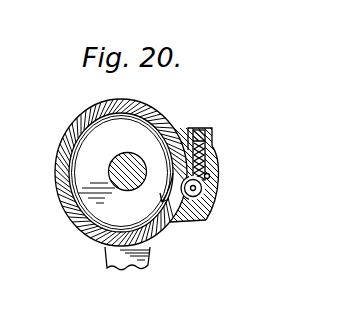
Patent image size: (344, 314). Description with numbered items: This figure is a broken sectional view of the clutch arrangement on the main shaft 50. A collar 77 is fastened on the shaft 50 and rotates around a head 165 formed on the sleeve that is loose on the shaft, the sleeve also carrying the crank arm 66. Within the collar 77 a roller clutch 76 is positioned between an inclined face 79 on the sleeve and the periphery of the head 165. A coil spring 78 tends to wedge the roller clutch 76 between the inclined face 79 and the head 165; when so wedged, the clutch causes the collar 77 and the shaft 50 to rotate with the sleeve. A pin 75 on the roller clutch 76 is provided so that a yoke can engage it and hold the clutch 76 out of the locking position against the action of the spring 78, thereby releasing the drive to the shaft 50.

The main shaft 50 is at (112, 170).
The crank arm 66 is at (104, 259).
The pin 75 is at (195, 217).
The roller clutch 76 is at (195, 189).
The collar 77 is at (64, 199).
The coil spring 78 is at (217, 163).
The inclined face 79 is at (209, 177).
The head 165 is at (80, 222).